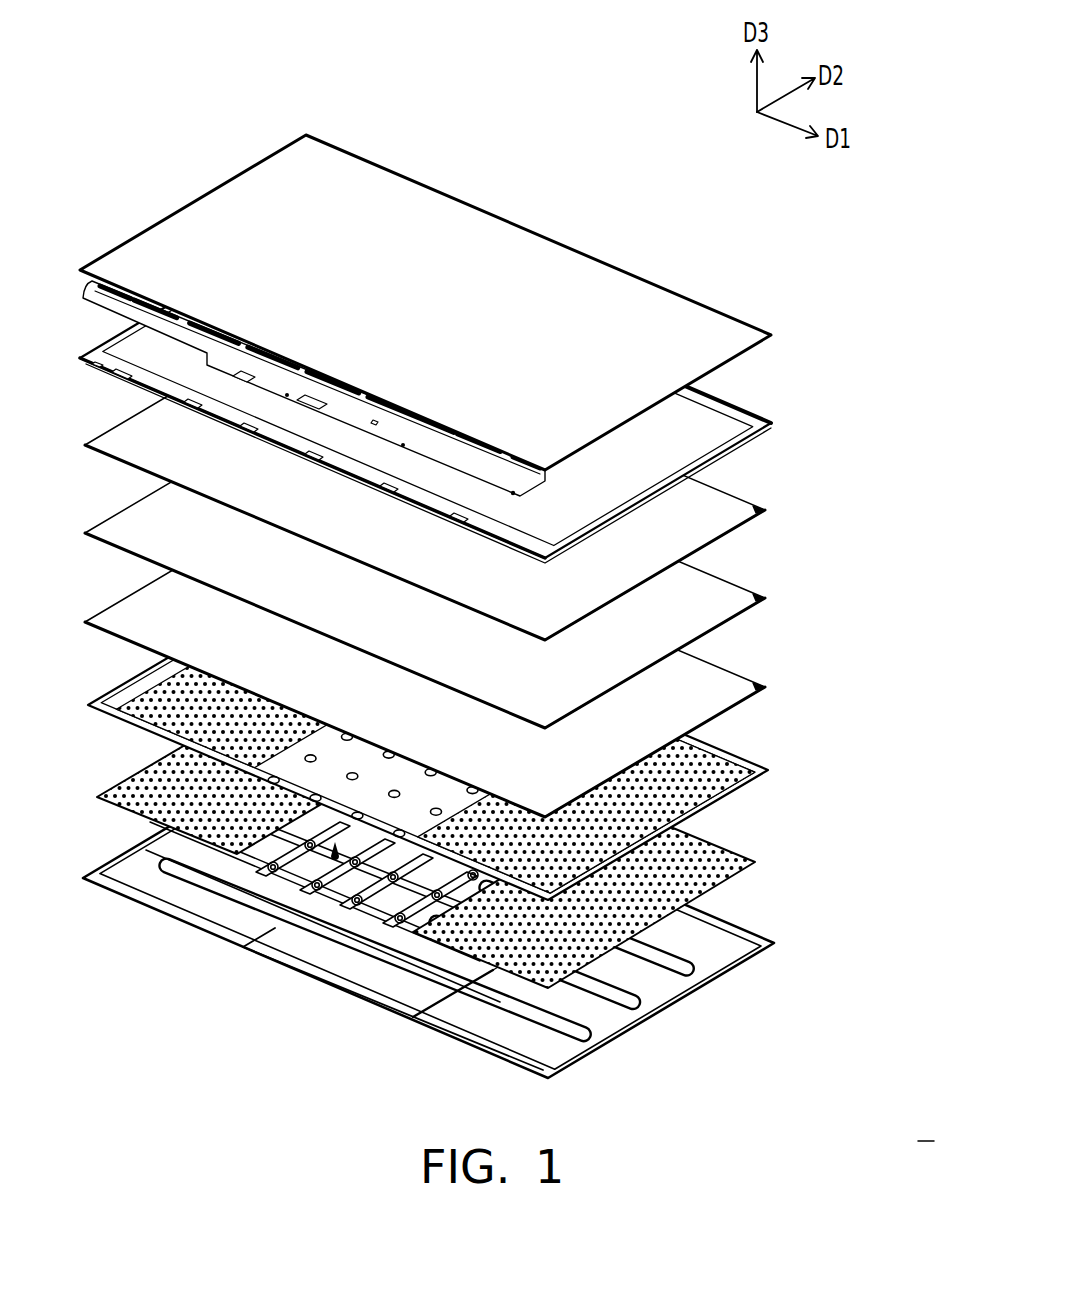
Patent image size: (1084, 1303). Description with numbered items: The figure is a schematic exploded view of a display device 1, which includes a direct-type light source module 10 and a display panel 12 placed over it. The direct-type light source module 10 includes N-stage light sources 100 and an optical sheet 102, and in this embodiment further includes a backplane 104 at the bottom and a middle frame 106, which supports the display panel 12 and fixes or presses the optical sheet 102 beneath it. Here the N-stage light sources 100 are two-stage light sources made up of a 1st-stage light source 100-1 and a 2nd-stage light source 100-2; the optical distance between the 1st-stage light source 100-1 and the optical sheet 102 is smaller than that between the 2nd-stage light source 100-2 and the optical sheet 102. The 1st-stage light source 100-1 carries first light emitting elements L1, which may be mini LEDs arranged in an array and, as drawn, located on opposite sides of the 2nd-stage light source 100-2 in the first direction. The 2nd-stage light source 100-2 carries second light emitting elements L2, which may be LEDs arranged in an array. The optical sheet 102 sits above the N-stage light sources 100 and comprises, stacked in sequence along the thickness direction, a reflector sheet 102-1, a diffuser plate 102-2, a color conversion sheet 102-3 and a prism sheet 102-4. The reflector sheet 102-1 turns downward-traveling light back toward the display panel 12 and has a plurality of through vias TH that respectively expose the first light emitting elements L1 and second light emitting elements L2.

The display device 1 is at (926, 1127).
The direct-type light source module 10 is at (501, 650).
The display panel 12 is at (733, 351).
The N-stage light sources 100 is at (481, 827).
The 1st-stage light source 100-1 is at (713, 887).
The 2nd-stage light source 100-2 is at (455, 820).
The optical sheet 102 is at (481, 607).
The reflector sheet 102-1 is at (454, 737).
The diffuser plate 102-2 is at (767, 687).
The color conversion sheet 102-3 is at (767, 598).
The prism sheet 102-4 is at (476, 477).
The backplane 104 is at (567, 1050).
The middle frame 106 is at (498, 393).
The through vias TH is at (300, 758).
The first light emitting elements L1 is at (100, 797).
The second light emitting elements L2 is at (262, 868).